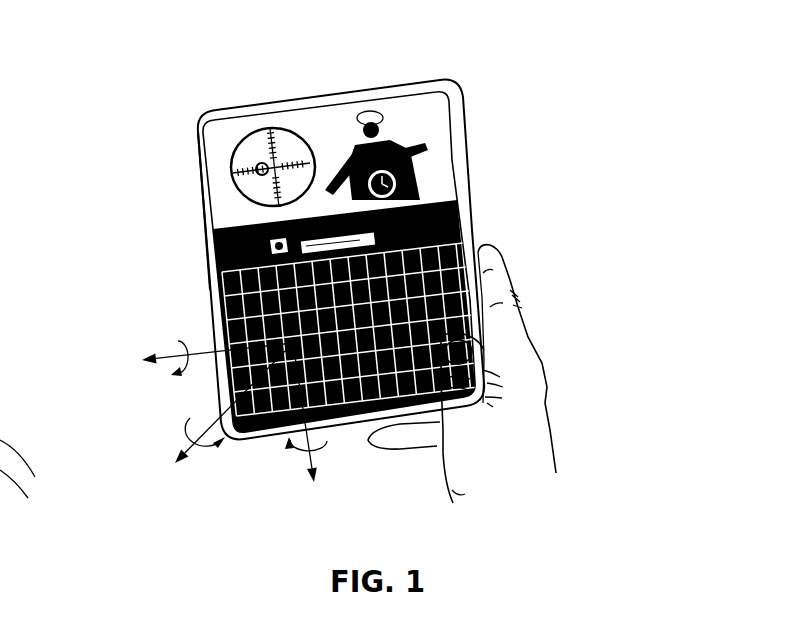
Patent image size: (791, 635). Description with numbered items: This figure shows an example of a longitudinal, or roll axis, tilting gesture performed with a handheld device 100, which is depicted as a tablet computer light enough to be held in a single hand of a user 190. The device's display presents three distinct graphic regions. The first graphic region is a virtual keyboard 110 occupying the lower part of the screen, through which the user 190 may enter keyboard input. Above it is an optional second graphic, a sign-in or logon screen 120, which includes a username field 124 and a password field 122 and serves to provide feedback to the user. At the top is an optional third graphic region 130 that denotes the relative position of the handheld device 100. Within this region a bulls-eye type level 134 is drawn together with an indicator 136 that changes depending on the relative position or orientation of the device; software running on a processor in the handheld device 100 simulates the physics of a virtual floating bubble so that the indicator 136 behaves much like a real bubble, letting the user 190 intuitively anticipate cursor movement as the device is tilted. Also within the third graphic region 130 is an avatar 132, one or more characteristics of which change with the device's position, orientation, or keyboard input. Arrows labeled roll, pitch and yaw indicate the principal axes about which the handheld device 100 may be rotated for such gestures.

The handheld device 100 is at (489, 78).
The virtual keyboard 110 is at (474, 247).
The sign-in or logon screen 120 is at (460, 217).
The password field 122 is at (323, 253).
The username field 124 is at (318, 240).
The third graphic region 130 is at (197, 158).
The avatar 132 is at (393, 143).
The bulls-eye type level 134 is at (285, 128).
The indicator 136 is at (258, 162).
The user 190 is at (526, 458).